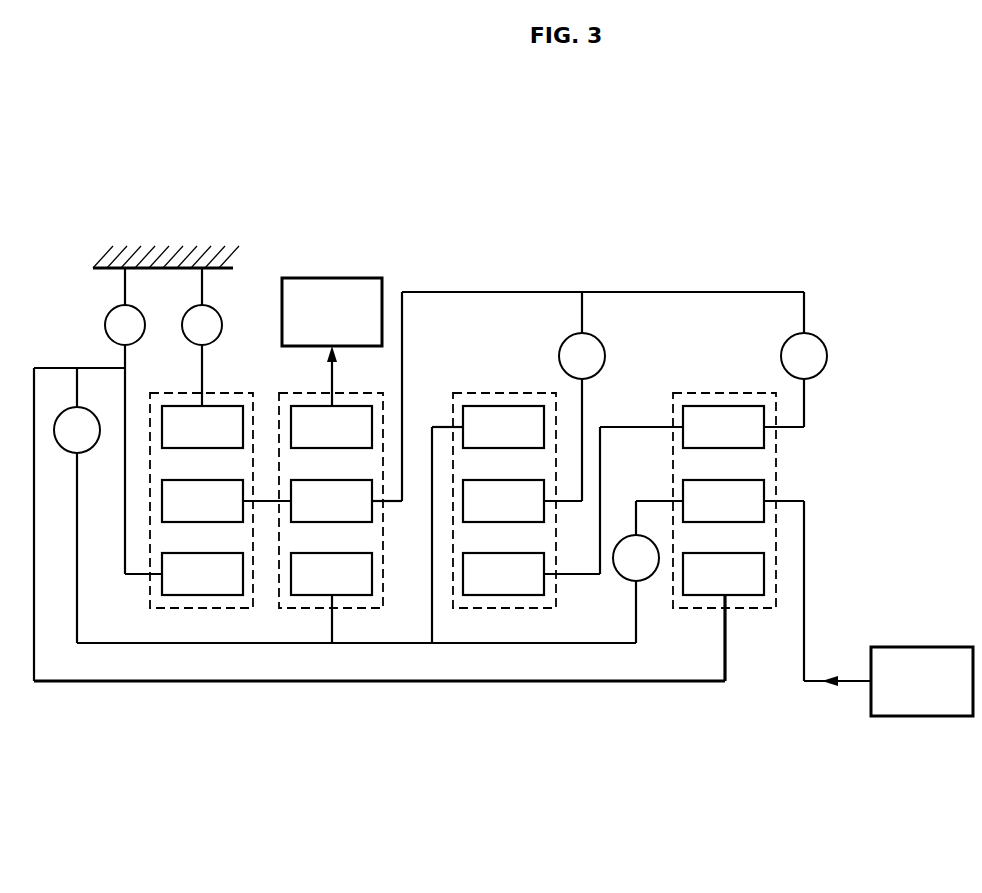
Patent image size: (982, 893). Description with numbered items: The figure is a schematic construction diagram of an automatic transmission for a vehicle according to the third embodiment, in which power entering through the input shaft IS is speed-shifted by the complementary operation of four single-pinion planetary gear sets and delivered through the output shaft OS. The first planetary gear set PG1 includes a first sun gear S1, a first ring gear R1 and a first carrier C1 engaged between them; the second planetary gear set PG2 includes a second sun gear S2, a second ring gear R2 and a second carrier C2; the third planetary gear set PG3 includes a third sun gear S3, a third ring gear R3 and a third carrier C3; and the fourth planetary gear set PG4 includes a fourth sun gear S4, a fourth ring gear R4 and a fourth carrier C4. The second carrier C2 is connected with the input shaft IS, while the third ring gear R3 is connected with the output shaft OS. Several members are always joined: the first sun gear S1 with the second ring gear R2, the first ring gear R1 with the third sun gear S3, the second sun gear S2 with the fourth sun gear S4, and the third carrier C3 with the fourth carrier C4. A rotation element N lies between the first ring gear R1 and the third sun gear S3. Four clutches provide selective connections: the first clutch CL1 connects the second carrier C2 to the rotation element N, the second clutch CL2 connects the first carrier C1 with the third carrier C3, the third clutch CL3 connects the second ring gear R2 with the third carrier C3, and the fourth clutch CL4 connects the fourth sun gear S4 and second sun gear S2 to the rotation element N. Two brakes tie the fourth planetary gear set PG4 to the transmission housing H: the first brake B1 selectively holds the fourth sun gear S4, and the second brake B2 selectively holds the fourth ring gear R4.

The transmission housing H is at (165, 264).
The output shaft OS is at (332, 278).
The input shaft IS is at (921, 716).
The rotation element N is at (378, 645).
The first planetary gear set PG1 is at (557, 565).
The second planetary gear set PG2 is at (724, 565).
The third planetary gear set PG3 is at (313, 565).
The fourth planetary gear set PG4 is at (201, 565).
The first brake B1 is at (133, 421).
The second brake B2 is at (202, 337).
The first clutch CL1 is at (648, 572).
The second clutch CL2 is at (574, 396).
The third clutch CL3 is at (599, 396).
The fourth clutch CL4 is at (79, 524).
The first ring gear R1 is at (503, 427).
The first carrier C1 is at (503, 501).
The first sun gear S1 is at (503, 574).
The second ring gear R2 is at (723, 427).
The second carrier C2 is at (723, 501).
The second sun gear S2 is at (723, 574).
The third ring gear R3 is at (331, 427).
The third carrier C3 is at (331, 501).
The third sun gear S3 is at (331, 574).
The fourth ring gear R4 is at (202, 427).
The fourth carrier C4 is at (202, 501).
The fourth sun gear S4 is at (202, 574).